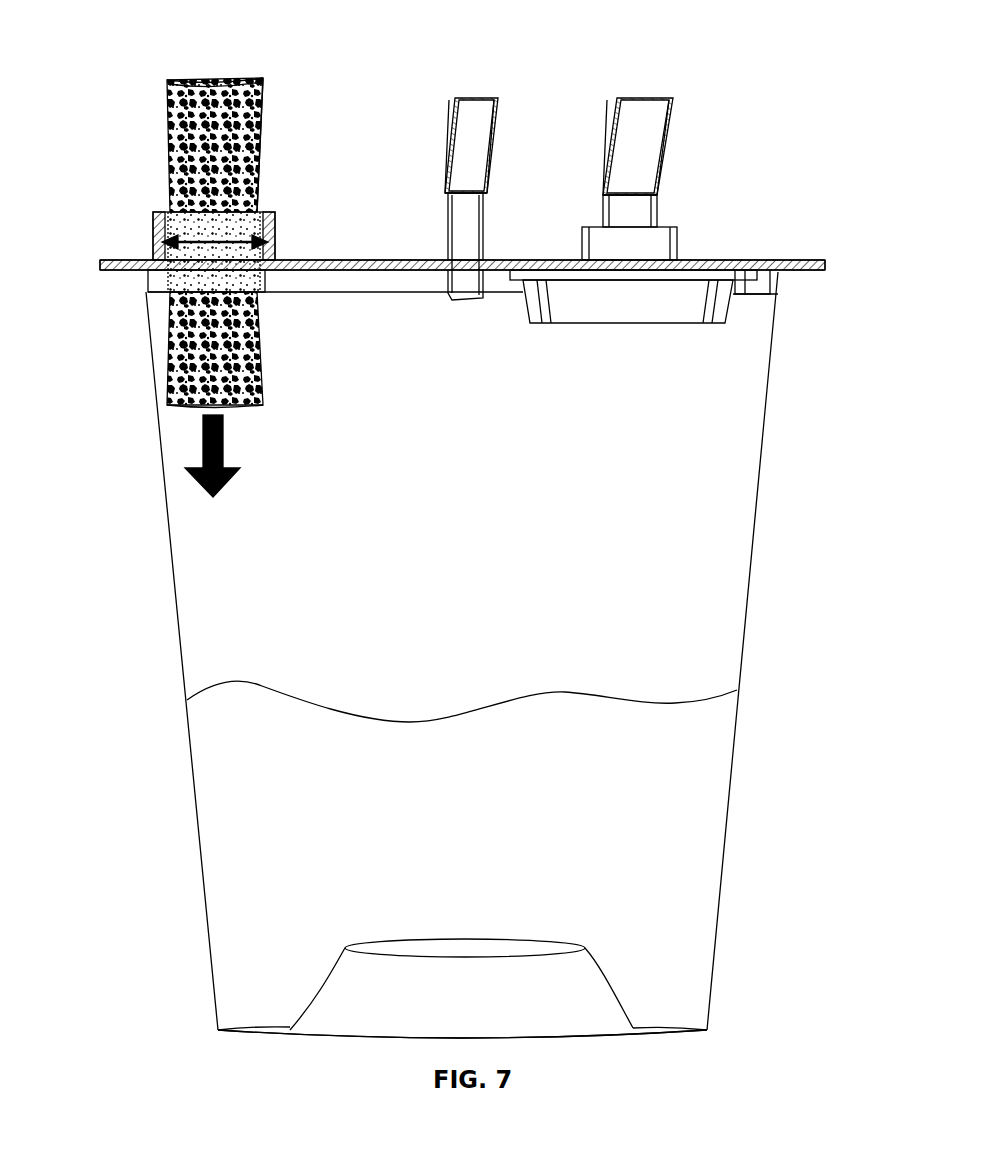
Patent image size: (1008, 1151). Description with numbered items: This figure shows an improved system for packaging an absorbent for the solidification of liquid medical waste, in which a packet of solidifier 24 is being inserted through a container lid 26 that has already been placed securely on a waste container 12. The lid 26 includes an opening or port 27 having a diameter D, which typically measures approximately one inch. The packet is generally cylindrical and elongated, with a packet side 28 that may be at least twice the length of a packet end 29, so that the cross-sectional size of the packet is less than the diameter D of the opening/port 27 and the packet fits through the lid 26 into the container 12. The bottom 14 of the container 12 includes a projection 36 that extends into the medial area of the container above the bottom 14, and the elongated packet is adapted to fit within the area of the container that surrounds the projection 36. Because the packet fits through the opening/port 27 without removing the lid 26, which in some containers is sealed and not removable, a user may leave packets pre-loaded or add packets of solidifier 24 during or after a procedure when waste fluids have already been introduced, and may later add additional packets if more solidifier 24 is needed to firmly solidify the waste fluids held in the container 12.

The container 12 is at (753, 530).
The bottom 14 is at (262, 1035).
The solidifier 24 is at (172, 147).
The container lid 26 is at (795, 262).
The opening/port 27 is at (153, 230).
The packet side 28 is at (235, 83).
The packet end 29 is at (263, 137).
The projection 36 is at (347, 982).
The diameter of the opening/port D is at (210, 240).